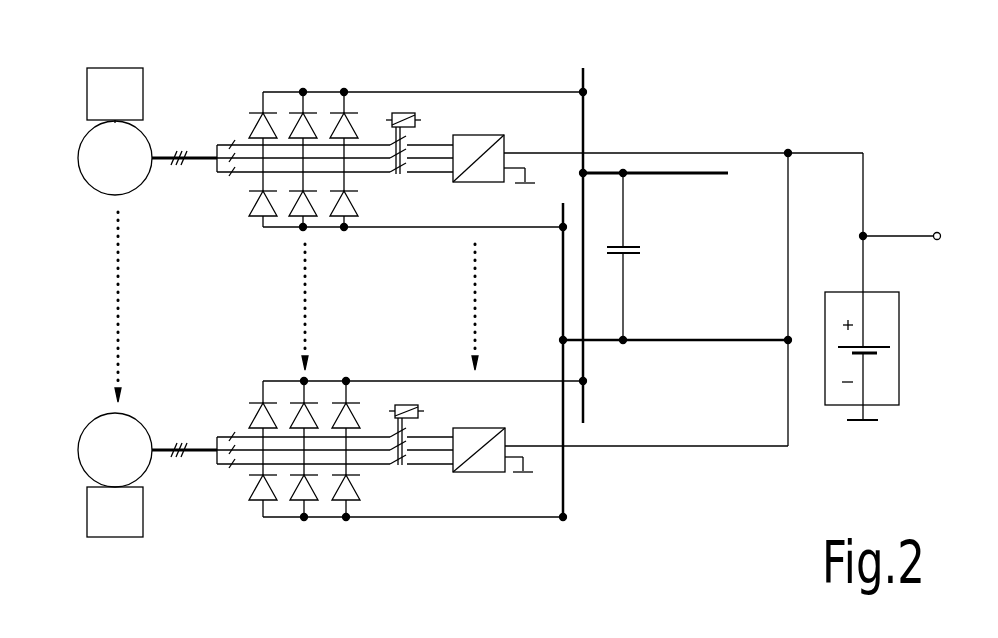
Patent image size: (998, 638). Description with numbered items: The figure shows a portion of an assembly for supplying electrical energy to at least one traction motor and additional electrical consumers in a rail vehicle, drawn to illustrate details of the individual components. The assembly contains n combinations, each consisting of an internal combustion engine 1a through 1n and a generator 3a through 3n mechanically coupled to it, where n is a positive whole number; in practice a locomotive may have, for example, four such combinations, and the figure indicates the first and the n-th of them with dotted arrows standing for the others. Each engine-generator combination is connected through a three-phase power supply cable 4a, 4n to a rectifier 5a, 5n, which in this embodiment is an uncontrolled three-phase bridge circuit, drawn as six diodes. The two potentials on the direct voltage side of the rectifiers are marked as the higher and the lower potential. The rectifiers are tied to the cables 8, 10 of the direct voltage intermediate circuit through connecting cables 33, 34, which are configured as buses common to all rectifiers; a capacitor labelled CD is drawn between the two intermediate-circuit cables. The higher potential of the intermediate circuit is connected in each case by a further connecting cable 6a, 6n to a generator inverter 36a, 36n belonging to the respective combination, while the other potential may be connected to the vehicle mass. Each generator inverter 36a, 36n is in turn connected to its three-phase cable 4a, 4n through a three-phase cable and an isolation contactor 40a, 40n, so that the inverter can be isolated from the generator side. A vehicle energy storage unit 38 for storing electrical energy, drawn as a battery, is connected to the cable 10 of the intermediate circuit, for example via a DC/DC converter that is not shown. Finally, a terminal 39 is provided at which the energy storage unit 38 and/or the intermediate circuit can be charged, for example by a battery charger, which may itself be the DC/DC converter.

The internal combustion engine 1a is at (87, 87).
The generator 3a is at (80, 172).
The three-phase power supply cable 4a is at (200, 150).
The rectifier 5a is at (312, 78).
The isolation contactor 40a is at (392, 112).
The generator inverter 36a is at (478, 135).
The connecting cable 33 is at (586, 120).
The connecting cable 34 is at (560, 302).
The connecting cable 6a is at (706, 152).
The cable of the direct voltage intermediate circuit 8 is at (690, 174).
The DC link capacitor CD is at (630, 246).
The cable of the direct voltage intermediate circuit 10 is at (678, 342).
The vehicle energy storage unit 38 is at (838, 406).
The terminal 39 is at (940, 232).
The internal combustion engine 1n is at (87, 519).
The generator 3n is at (80, 448).
The three-phase power supply cable 4n is at (202, 449).
The rectifier 5n is at (302, 532).
The isolation contactor 40n is at (396, 406).
The generator inverter 36n is at (476, 428).
The connecting cable 6n is at (715, 447).